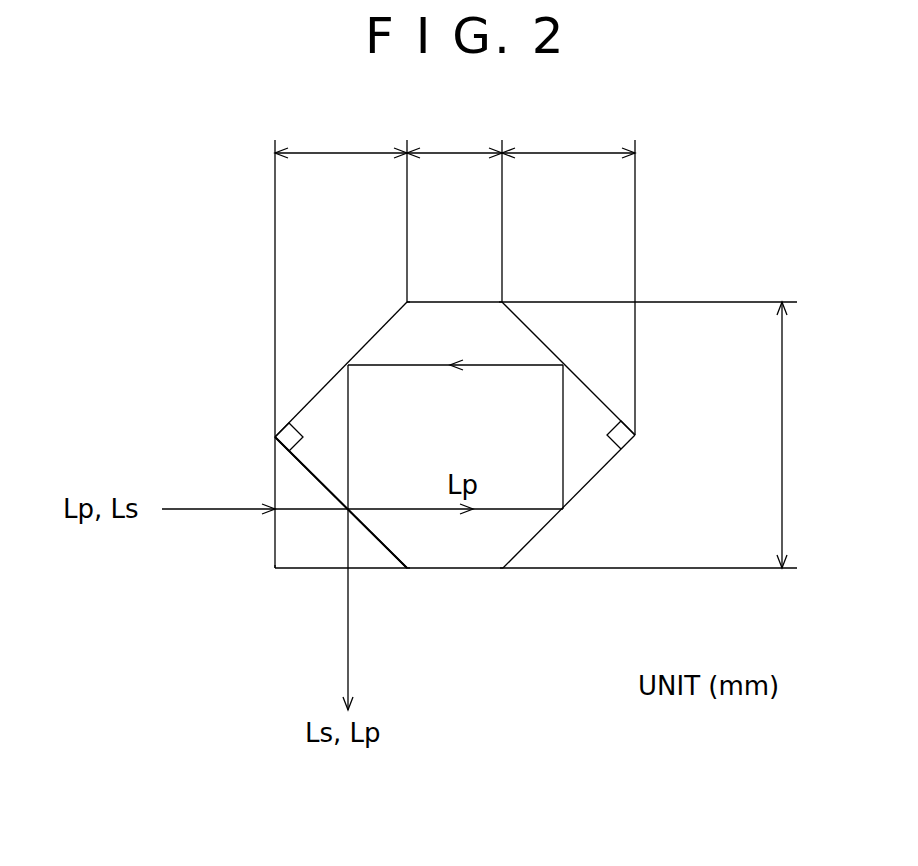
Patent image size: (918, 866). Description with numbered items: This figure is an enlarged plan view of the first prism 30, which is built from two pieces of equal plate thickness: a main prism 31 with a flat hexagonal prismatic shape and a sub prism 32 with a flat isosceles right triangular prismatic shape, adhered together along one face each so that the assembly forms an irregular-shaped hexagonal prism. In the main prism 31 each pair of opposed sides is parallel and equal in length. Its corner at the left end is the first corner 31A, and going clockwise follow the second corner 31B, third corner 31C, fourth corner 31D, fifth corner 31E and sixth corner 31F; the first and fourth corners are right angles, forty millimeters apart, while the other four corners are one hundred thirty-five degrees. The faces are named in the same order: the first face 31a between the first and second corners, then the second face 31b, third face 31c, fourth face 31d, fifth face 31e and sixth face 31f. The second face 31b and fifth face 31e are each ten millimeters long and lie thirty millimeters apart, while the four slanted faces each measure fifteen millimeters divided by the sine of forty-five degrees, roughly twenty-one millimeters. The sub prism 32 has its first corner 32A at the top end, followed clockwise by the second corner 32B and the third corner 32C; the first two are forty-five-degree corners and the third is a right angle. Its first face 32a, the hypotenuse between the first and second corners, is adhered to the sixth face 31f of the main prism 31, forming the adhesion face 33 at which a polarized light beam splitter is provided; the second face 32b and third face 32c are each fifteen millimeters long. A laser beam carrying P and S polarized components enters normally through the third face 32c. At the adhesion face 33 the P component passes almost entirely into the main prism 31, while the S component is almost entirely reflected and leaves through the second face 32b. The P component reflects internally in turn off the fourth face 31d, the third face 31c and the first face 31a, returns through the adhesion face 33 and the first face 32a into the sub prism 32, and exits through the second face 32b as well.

The first prism 30 is at (562, 300).
The main prism 31 is at (421, 446).
The first face 31a is at (325, 387).
The second face 31b is at (470, 302).
The third face 31c is at (540, 340).
The fourth face 31d is at (590, 480).
The fifth face 31e is at (462, 570).
The sixth face 31f is at (373, 535).
The first corner 31A is at (203, 425).
The second corner 31B is at (407, 302).
The third corner 31C is at (502, 302).
The fourth corner 31D is at (635, 435).
The fifth corner 31E is at (503, 569).
The sixth corner 31F is at (453, 631).
The sub prism 32 is at (297, 550).
The first face 32a is at (310, 470).
The second face 32b is at (322, 569).
The third face 32c is at (275, 545).
The first corner 32A is at (275, 437).
The second corner 32B is at (407, 569).
The third corner 32C is at (293, 552).
The adhesion face 33 is at (322, 486).